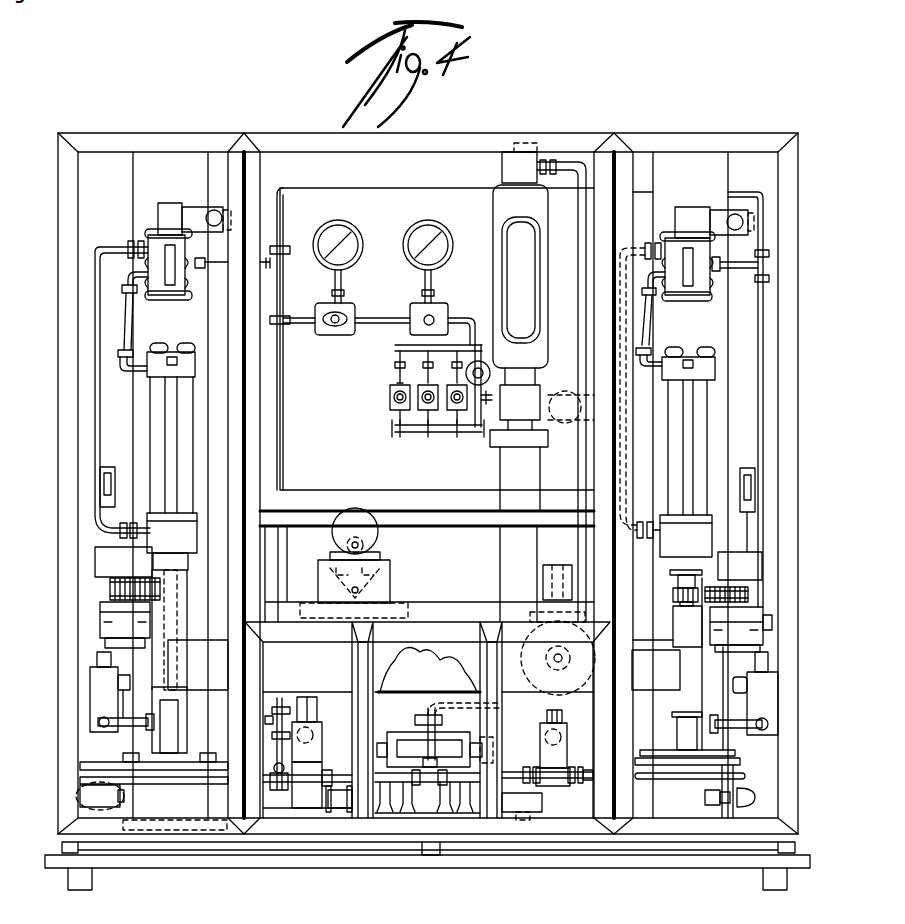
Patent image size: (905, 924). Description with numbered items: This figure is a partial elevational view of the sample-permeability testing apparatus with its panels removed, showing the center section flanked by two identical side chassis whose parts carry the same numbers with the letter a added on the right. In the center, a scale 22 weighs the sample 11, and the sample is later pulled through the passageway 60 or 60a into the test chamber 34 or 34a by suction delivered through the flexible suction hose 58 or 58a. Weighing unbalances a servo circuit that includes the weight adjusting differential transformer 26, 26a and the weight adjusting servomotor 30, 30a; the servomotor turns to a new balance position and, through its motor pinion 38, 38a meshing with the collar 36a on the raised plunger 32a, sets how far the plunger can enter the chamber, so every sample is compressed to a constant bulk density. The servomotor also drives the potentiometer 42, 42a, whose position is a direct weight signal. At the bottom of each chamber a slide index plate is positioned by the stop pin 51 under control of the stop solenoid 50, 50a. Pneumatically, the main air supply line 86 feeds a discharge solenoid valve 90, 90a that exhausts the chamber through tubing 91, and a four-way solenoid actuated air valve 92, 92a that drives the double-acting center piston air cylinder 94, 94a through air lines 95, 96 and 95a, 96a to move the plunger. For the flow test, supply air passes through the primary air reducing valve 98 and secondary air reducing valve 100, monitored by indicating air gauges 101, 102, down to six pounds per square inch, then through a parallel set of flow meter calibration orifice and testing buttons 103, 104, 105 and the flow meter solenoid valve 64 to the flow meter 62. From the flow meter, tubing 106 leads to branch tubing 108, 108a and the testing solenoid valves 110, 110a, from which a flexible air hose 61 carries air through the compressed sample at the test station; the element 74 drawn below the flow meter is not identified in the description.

The sample 11 is at (437, 686).
The scale 22 is at (388, 684).
The weight adjusting differential transformer 26 is at (95, 533).
The weight adjusting differential transformer 26a is at (750, 540).
The weight adjusting servomotor 30 is at (103, 628).
The weight adjusting servomotor 30a is at (741, 629).
The variable positioned plunger 32a is at (700, 673).
The test chamber 34 is at (183, 717).
The test chamber 34a is at (715, 745).
The collar 36a is at (673, 594).
The motor pinion 38 is at (110, 588).
The motor pinion 38a is at (748, 595).
The potentiometer 42 is at (110, 470).
The potentiometer 42a is at (749, 468).
The stop solenoid 50 is at (168, 738).
The stop solenoid 50a is at (682, 733).
The stop pin 51 is at (158, 770).
The suction hose 58 is at (90, 797).
The suction hose 58a is at (760, 781).
The passageway 60 is at (340, 665).
The passageway 60a is at (653, 681).
The flexible air hose 61 is at (83, 776).
The flow meter 62 is at (497, 208).
The flow meter solenoid valve 64 is at (493, 365).
The pipe 74 is at (505, 468).
The main air supply line 86 is at (282, 425).
The discharge solenoid valve 90 is at (90, 678).
The discharge solenoid valve 90a is at (778, 680).
The tubing 91 is at (98, 720).
The four-way solenoid actuated air valve 92 is at (158, 212).
The four-way solenoid actuated air valve 92a is at (690, 300).
The double-acting center piston air cylinder 94 is at (180, 442).
The double-acting center piston air cylinder 94a is at (700, 393).
The air line 95 is at (131, 318).
The air line 95a is at (650, 344).
The air line 96 is at (100, 386).
The air line 96a is at (637, 250).
The primary air reducing valve 98 is at (343, 302).
The secondary air reducing valve 100 is at (443, 302).
The indicating air gauge 101 is at (338, 220).
The indicating air gauge 102 is at (428, 220).
The flow meter calibration orifice and testing button 103 is at (393, 393).
The flow meter calibration orifice and testing button 104 is at (452, 383).
The flow meter calibration orifice and testing button 105 is at (400, 380).
The tubing 106 is at (577, 347).
The branch tubing 108 is at (330, 772).
The branch tubing 108a is at (510, 772).
The testing solenoid valve 110 is at (320, 732).
The testing solenoid valve 110a is at (558, 786).